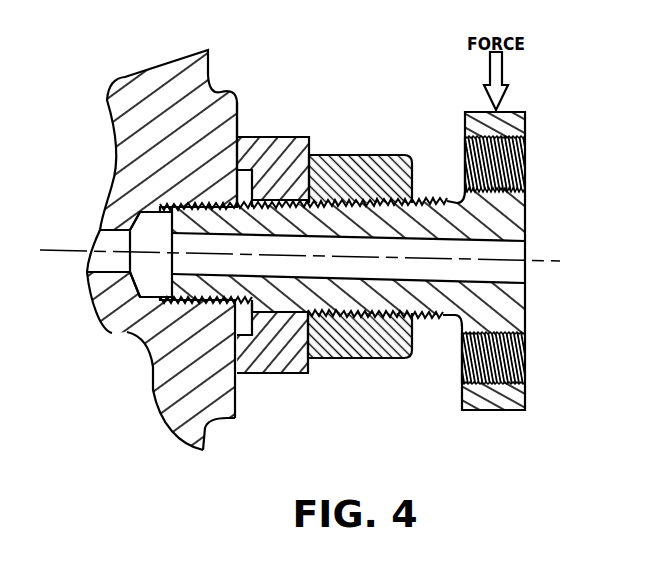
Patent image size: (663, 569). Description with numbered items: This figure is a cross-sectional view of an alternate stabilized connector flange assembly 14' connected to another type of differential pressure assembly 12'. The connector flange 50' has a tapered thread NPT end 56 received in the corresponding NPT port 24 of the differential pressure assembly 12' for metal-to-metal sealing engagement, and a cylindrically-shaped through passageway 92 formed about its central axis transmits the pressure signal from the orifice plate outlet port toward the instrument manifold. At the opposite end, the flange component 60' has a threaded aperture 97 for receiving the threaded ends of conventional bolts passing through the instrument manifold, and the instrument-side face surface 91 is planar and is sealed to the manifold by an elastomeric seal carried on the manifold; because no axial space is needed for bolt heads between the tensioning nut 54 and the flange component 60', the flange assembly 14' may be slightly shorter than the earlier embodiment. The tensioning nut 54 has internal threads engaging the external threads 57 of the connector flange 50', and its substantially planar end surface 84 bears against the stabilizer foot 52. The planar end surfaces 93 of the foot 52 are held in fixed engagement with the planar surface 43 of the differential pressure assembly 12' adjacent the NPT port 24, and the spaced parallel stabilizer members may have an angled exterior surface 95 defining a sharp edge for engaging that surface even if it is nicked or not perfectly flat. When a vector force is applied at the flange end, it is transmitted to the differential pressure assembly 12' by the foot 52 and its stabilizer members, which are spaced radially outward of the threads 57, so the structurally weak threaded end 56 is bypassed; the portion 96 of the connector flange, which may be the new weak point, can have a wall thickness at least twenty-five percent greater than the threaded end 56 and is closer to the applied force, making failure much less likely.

The differential pressure assembly 12' is at (180, 242).
The planar surface 43 is at (233, 183).
The threads 57 is at (193, 205).
The angled exterior surface 95 is at (245, 162).
The stabilizer foot 52 is at (295, 142).
The connector flange 50' is at (342, 211).
The tensioning nut 54 is at (387, 163).
The flange component 60' is at (531, 144).
The threaded aperture 97 is at (525, 152).
The instrument-side face surface 91 is at (525, 223).
The through passageway 92 is at (300, 258).
The portion of the connector flange 96 is at (440, 306).
The port 24 is at (150, 275).
The tapered thread NPT end 56 is at (155, 358).
The planar end surfaces 93 is at (215, 378).
The planar end surface 84 is at (305, 357).
The flange assembly 14' is at (360, 374).